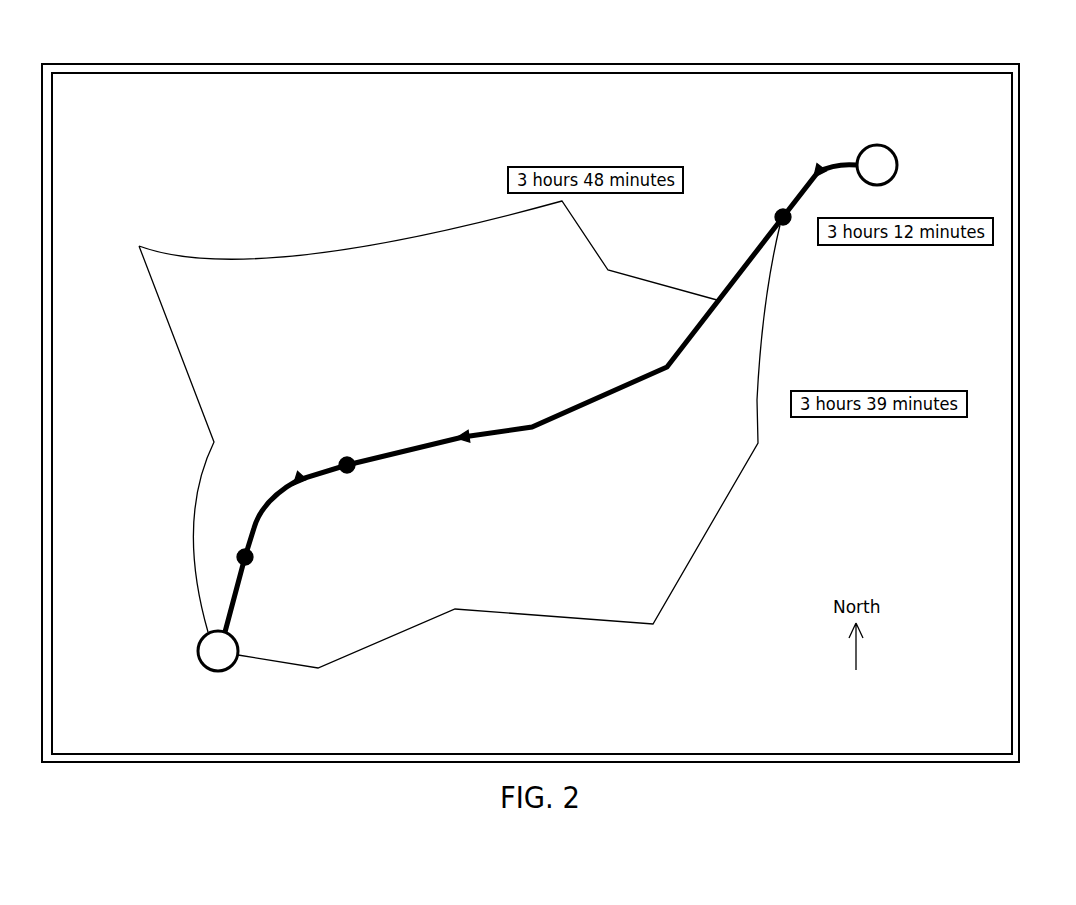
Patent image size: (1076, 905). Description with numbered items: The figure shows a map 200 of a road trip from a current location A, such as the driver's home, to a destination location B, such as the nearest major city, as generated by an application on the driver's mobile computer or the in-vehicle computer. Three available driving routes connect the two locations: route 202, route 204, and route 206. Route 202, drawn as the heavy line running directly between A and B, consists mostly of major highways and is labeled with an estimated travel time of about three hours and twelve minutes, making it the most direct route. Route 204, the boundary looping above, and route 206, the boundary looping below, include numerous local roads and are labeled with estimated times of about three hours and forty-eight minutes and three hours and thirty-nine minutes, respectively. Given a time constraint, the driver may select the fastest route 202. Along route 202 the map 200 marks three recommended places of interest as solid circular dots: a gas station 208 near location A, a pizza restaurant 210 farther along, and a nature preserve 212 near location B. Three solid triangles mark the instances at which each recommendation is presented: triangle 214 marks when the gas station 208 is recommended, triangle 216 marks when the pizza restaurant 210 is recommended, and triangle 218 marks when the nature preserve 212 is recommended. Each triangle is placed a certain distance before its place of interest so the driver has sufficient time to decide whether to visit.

The map 200 is at (993, 30).
The route 202 is at (800, 198).
The route 204 is at (573, 207).
The route 206 is at (757, 375).
The gas station 208 is at (775, 217).
The pizza restaurant 210 is at (353, 472).
The nature preserve 212 is at (253, 560).
The triangle 214 is at (812, 168).
The triangle 216 is at (460, 446).
The triangle 218 is at (297, 490).